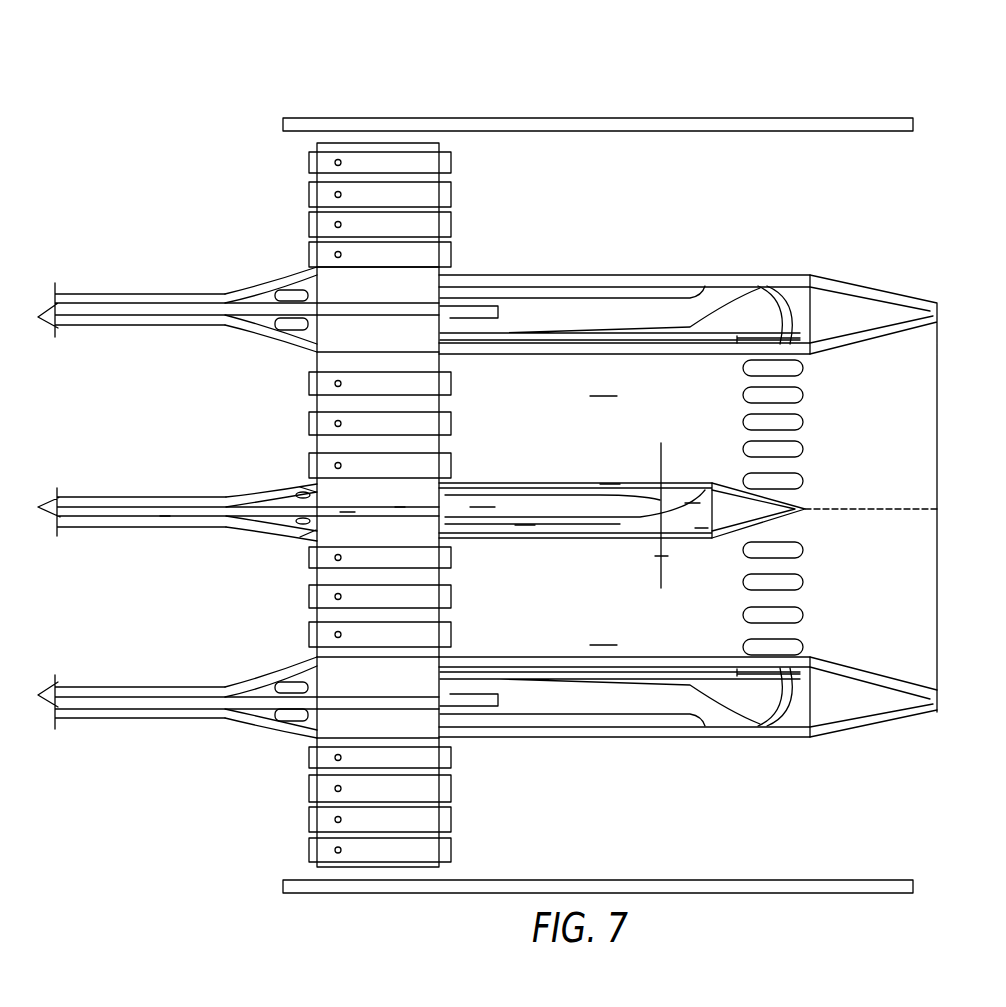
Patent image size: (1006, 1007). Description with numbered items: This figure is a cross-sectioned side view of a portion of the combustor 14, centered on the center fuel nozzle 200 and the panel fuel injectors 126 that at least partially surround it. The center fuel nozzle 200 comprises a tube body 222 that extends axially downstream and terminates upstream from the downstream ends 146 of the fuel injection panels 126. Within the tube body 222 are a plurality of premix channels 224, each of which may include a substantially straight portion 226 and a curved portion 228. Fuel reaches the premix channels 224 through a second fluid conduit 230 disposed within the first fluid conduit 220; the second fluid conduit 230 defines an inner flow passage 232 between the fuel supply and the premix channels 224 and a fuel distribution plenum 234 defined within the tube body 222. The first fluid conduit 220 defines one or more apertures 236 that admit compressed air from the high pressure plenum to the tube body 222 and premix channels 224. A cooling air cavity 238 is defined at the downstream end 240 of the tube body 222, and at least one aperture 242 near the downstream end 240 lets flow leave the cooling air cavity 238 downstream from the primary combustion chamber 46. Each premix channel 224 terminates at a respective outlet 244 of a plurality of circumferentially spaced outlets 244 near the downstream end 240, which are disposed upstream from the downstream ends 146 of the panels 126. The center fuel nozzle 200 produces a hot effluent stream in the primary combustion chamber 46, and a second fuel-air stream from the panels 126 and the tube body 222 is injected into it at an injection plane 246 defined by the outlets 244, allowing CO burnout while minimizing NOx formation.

The combustor 14 is at (872, 108).
The primary combustion chamber 46 is at (603, 506).
The panel fuel injector 126 is at (693, 262).
The downstream end 146 is at (910, 296).
The center fuel nozzle 200 is at (298, 411).
The first fluid conduit 220 is at (108, 497).
The tube body 222 is at (575, 460).
The premix channel 224 is at (525, 525).
The straight portion 226 is at (610, 484).
The curved portion 228 is at (692, 503).
The second fluid conduit 230 is at (165, 518).
The inner flow passage 232 is at (347, 512).
The fuel distribution plenum 234 is at (483, 506).
The aperture 236 is at (312, 492).
The cooling air cavity 238 is at (700, 528).
The downstream end 240 is at (770, 483).
The aperture 242 is at (800, 509).
The outlet 244 is at (670, 472).
The injection plane 246 is at (660, 556).